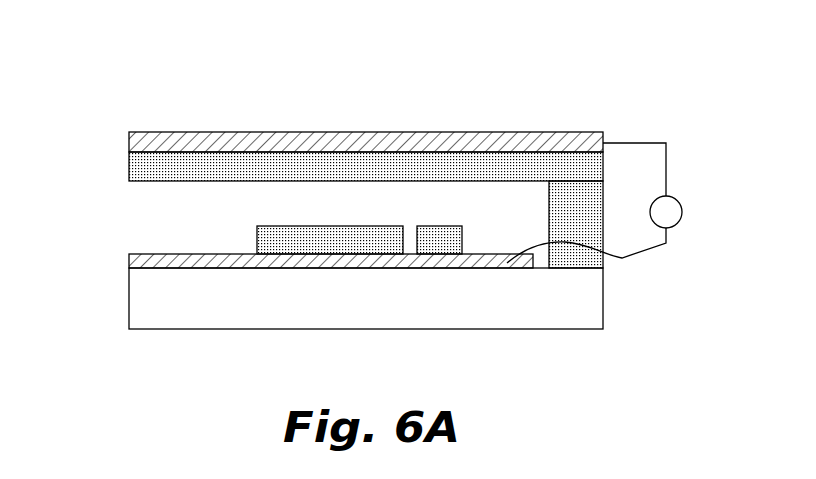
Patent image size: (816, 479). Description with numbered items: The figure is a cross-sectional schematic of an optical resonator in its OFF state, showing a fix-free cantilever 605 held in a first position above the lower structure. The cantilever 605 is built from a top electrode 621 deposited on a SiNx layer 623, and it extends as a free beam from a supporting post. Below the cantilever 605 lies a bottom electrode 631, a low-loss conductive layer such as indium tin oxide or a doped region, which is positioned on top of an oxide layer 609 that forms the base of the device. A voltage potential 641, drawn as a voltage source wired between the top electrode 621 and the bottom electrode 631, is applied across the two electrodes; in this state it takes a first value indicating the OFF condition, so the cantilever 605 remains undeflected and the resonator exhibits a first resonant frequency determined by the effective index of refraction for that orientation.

The fix-free cantilever 605 is at (317, 182).
The top electrode 621 is at (167, 141).
The SiNx layer 623 is at (137, 172).
The bottom electrode 631 is at (130, 263).
The oxide layer 609 is at (587, 305).
The voltage potential 641 is at (676, 215).